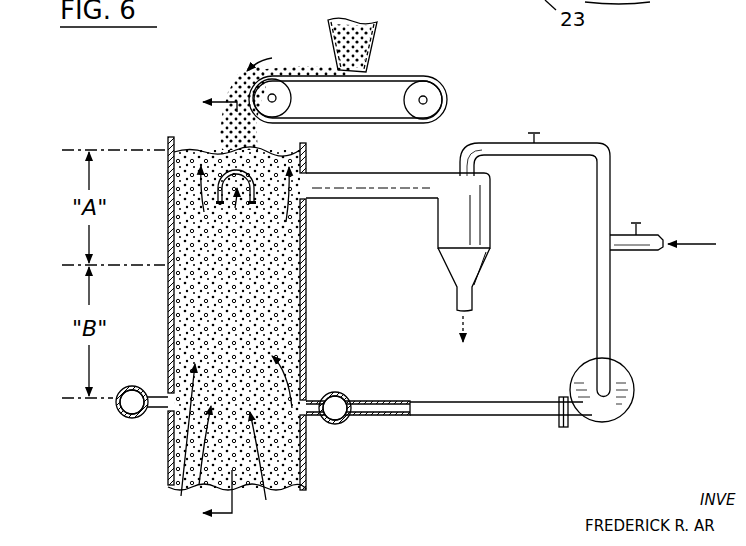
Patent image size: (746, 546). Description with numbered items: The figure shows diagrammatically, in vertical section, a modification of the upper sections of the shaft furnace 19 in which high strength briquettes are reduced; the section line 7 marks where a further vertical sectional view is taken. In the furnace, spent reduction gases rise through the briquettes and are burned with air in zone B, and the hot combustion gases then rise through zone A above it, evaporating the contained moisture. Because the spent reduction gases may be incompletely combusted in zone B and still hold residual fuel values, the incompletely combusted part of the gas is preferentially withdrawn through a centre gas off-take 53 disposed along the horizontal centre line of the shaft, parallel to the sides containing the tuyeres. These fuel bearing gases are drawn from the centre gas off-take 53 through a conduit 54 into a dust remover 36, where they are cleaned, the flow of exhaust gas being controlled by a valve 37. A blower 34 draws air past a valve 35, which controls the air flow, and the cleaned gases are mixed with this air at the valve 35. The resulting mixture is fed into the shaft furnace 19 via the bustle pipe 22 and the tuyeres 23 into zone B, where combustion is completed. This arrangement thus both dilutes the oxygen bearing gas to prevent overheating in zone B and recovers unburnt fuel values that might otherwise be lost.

The section line 7— 7 is at (220, 307).
The shaft furnace 19 is at (307, 308).
The bustle pipe 22 is at (133, 418).
The tuyeres 23 is at (150, 386).
The blower 34 is at (625, 403).
The valve 35 is at (636, 222).
The dust remover 36 is at (491, 216).
The valve 37 is at (540, 133).
The centre gas off-take 53 is at (257, 158).
The conduit 54 is at (378, 199).